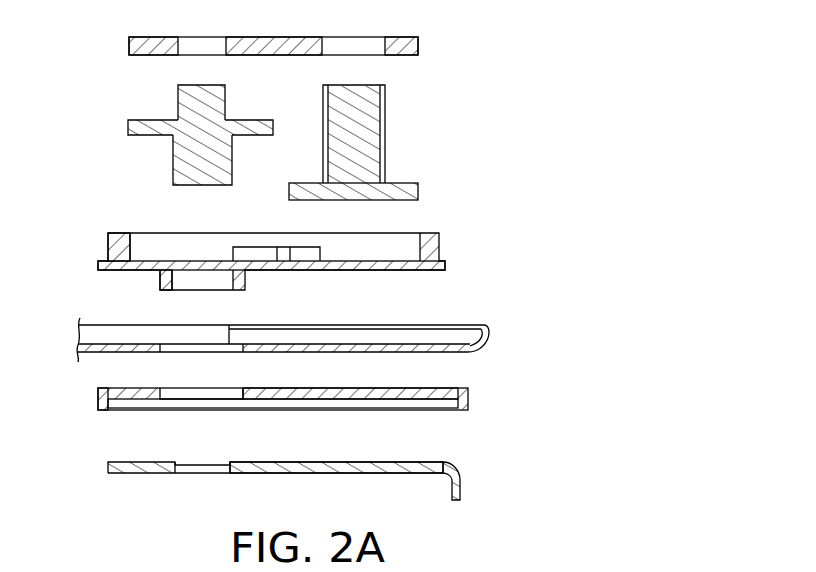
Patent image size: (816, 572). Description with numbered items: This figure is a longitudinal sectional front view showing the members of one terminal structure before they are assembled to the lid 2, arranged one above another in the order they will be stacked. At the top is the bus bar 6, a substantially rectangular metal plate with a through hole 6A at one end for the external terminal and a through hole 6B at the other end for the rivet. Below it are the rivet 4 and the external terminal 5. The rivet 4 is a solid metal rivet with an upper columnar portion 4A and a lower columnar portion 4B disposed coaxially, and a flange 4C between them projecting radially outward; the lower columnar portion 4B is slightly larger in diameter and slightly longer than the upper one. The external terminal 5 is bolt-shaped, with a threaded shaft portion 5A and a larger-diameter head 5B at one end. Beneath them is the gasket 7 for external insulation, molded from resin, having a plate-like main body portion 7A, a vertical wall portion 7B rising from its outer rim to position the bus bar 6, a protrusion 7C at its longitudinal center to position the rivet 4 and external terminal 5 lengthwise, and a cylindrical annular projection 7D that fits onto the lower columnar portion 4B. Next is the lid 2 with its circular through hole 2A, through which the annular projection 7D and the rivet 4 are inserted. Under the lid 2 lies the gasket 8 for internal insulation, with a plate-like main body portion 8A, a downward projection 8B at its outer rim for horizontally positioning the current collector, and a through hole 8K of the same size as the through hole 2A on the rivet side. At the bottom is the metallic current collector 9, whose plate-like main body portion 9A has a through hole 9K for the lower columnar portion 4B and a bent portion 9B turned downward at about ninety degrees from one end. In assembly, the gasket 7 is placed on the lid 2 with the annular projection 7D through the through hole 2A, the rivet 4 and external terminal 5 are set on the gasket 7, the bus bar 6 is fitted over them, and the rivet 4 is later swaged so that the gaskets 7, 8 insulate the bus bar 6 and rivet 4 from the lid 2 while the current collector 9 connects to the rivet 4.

The lid 2 is at (307, 318).
The through hole 2A is at (231, 325).
The rivet 4 is at (183, 127).
The columnar portion 4A is at (213, 104).
The columnar portion 4B is at (220, 153).
The flange 4C is at (134, 121).
The external terminal 5 is at (394, 132).
The shaft portion 5A is at (368, 135).
The head 5B is at (413, 194).
The bus bar 6 is at (284, 31).
The through hole 6A is at (385, 45).
The through hole 6B is at (178, 44).
The gasket 7 is at (270, 260).
The main body portion 7A is at (375, 267).
The vertical wall portion 7B is at (110, 252).
The protrusion 7C is at (290, 253).
The annular projection 7D is at (166, 280).
The gasket 8 is at (273, 413).
The main body portion 8A is at (370, 397).
The projection 8B is at (101, 410).
The through hole 8K is at (162, 390).
The current collector 9 is at (319, 482).
The main body portion 9A is at (347, 462).
The bent portion 9B is at (460, 490).
The through hole 9K is at (187, 473).